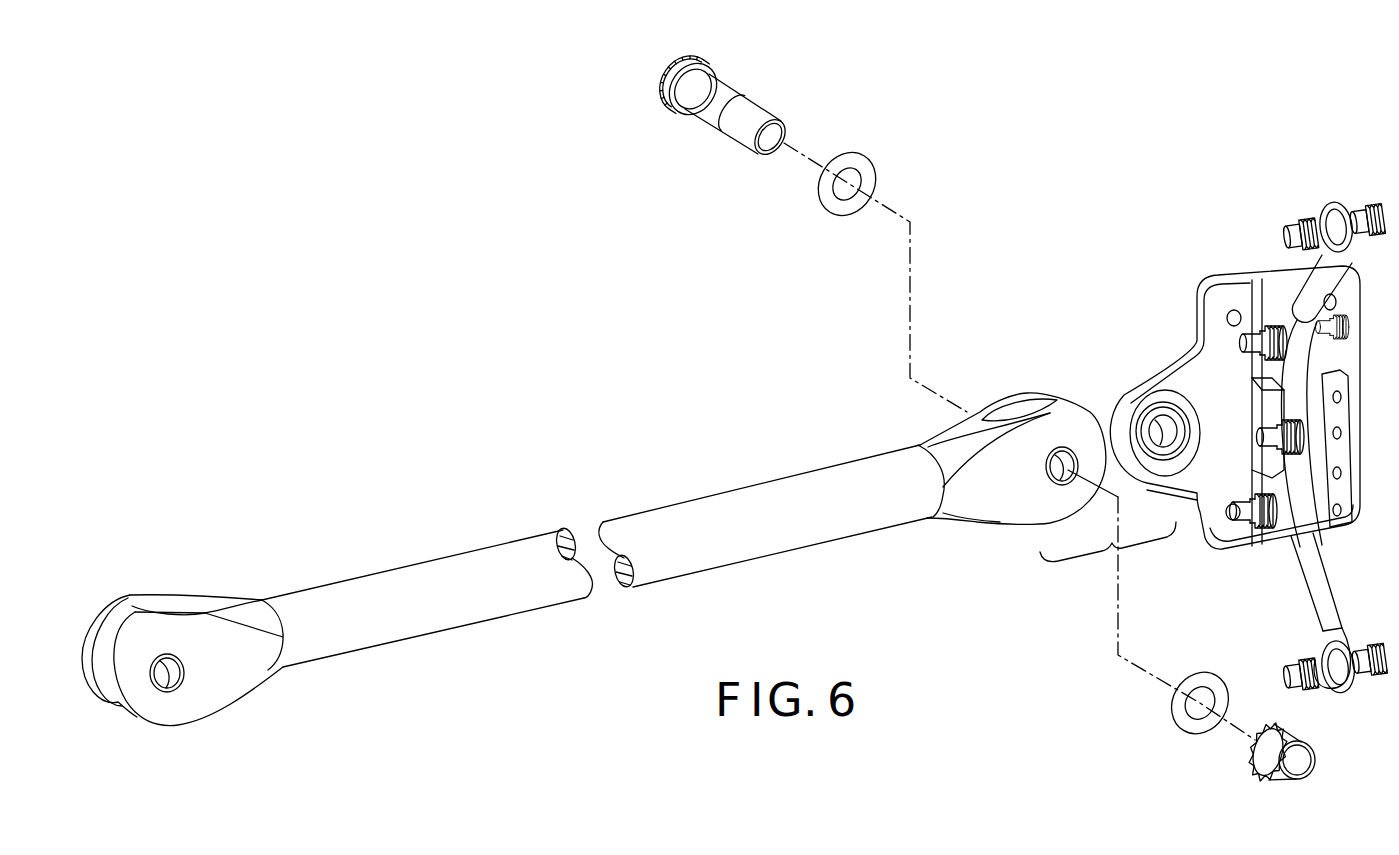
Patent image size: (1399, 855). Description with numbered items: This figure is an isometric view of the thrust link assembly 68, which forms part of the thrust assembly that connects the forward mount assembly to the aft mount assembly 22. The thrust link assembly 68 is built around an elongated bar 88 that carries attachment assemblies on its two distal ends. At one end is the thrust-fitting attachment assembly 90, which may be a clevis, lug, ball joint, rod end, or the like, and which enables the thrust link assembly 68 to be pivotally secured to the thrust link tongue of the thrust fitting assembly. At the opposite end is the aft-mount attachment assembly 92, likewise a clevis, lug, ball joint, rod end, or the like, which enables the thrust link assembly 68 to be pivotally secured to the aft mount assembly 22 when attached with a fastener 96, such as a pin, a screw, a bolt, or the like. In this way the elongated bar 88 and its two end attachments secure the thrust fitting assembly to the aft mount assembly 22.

The aft mount assembly 22 is at (1147, 241).
The thrust link assembly 68 is at (392, 437).
The elongated bar 88 is at (448, 607).
The thrust-fitting attachment assembly 90 is at (233, 673).
The aft-mount attachment assembly 92 is at (1010, 505).
The fastener 96 is at (710, 112).